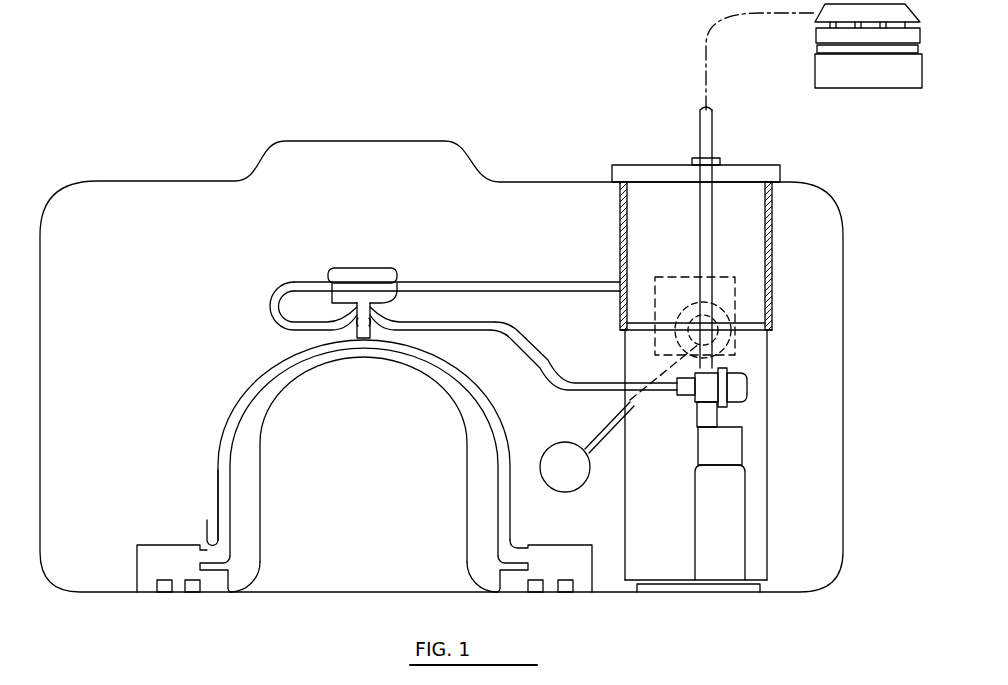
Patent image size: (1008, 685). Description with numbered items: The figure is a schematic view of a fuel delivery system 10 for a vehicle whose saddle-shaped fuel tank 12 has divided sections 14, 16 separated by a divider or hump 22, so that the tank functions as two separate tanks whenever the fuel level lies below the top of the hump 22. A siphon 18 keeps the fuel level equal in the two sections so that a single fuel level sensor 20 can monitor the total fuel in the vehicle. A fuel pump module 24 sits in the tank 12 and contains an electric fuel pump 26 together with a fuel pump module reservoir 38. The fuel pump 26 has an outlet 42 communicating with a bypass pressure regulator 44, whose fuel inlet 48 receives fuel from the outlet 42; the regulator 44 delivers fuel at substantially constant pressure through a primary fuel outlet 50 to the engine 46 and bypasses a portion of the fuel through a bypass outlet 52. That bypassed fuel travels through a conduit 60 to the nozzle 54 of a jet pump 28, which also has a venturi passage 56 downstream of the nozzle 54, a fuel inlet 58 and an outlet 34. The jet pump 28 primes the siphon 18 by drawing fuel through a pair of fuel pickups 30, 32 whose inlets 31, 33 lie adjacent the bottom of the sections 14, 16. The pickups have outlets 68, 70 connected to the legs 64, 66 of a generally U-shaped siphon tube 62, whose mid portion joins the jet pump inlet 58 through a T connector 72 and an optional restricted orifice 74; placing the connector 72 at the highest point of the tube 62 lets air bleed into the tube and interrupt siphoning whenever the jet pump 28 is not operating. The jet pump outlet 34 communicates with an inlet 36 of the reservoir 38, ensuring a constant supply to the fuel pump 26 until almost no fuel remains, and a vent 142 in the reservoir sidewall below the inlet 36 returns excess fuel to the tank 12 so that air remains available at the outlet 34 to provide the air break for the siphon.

The fuel delivery system 10 is at (140, 78).
The fuel tank 12 is at (393, 140).
The divided section 14 is at (262, 507).
The divided section 16 is at (466, 490).
The siphon 18 is at (258, 378).
The fuel level sensor 20 is at (598, 428).
The hump 22 is at (366, 358).
The fuel pump module 24 is at (768, 488).
The electric fuel pump 26 is at (738, 448).
The jet pump 28 is at (383, 268).
The fuel pickup 30 is at (218, 592).
The inlet 31 is at (192, 592).
The fuel pickup 32 is at (505, 590).
The inlet 33 is at (535, 592).
The outlet 34 is at (432, 282).
The inlet 36 is at (628, 280).
The fuel pump module reservoir 38 is at (633, 506).
The outlet 42 is at (712, 425).
The bypass pressure regulator 44 is at (745, 388).
The engine 46 is at (878, 88).
The fuel inlet 48 is at (700, 418).
The primary fuel outlet 50 is at (710, 368).
The bypass outlet 52 is at (690, 396).
The nozzle 54 is at (348, 292).
The venturi passage 56 is at (405, 296).
The fuel inlet 58 is at (330, 300).
The conduit 60 is at (567, 378).
The siphon tube 62 is at (222, 466).
The leg 64 is at (230, 418).
The leg 66 is at (488, 410).
The outlet 68 is at (210, 532).
The outlet 70 is at (497, 553).
The T connector 72 is at (345, 340).
The restricted orifice 74 is at (383, 332).
The vent 142 is at (768, 298).